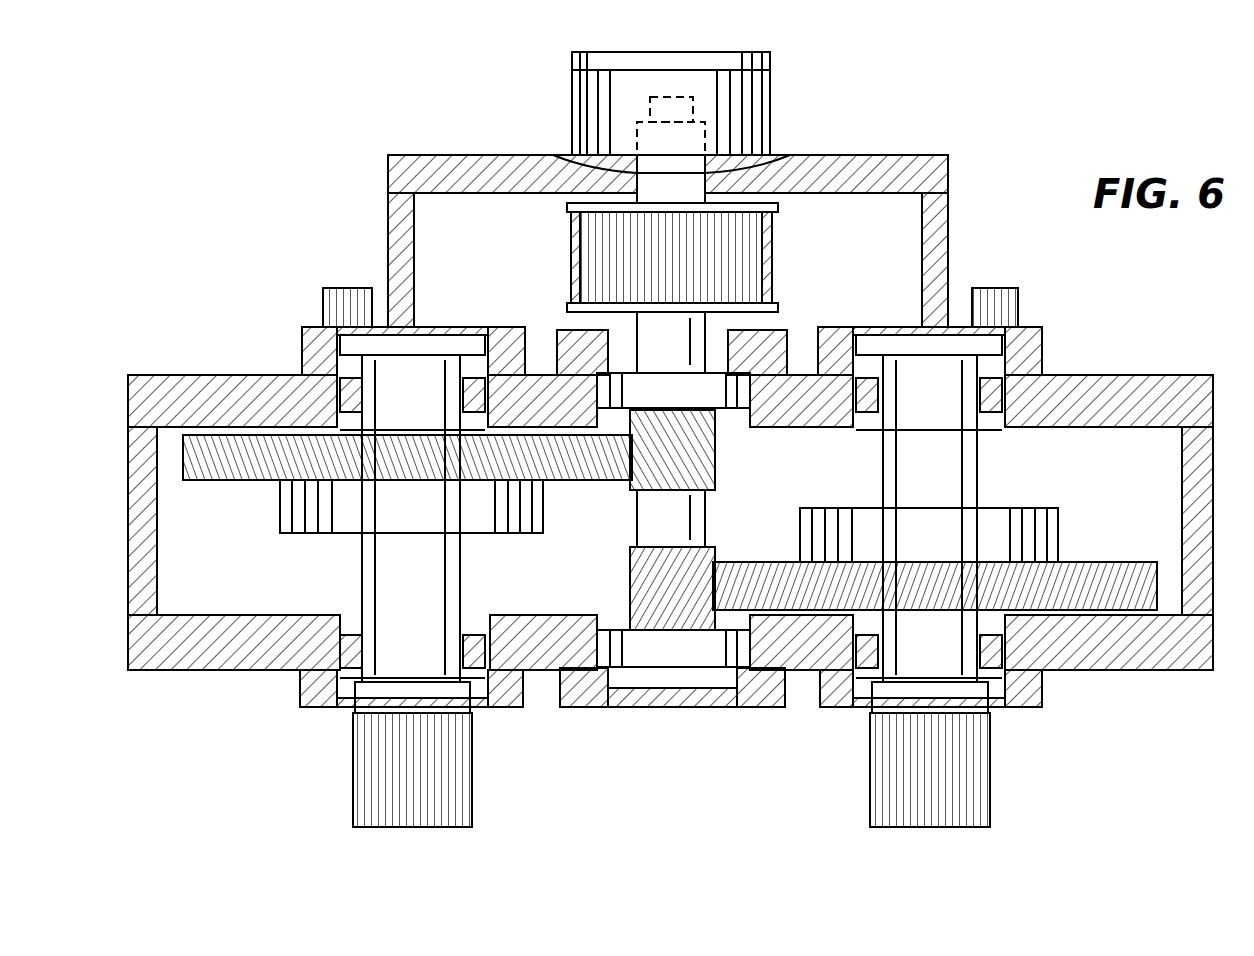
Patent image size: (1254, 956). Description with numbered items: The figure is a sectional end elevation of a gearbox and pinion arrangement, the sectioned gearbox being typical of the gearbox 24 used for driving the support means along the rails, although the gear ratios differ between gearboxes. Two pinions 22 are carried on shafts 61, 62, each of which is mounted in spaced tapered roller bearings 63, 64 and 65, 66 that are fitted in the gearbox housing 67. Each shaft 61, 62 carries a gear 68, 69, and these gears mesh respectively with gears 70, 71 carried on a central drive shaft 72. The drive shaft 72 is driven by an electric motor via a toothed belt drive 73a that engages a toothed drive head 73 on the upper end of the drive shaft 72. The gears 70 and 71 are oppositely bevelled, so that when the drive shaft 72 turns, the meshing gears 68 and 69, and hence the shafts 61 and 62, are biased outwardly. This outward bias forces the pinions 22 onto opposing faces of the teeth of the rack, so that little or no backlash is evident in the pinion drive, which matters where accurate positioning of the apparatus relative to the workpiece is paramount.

The pinion 22 is at (460, 790).
The gearbox 24 is at (170, 372).
The shaft 61 is at (398, 583).
The shaft 62 is at (953, 477).
The tapered roller bearing 63 is at (333, 647).
The tapered roller bearing 64 is at (330, 397).
The tapered roller bearing 65 is at (1010, 645).
The tapered roller bearing 66 is at (1007, 398).
The gearbox housing 67 is at (1130, 375).
The gear 68 is at (277, 460).
The gear 69 is at (1095, 560).
The gear 70 is at (690, 467).
The gear 71 is at (657, 577).
The drive shaft 72 is at (665, 520).
The toothed drive head 73 is at (728, 267).
The toothed belt drive 73a is at (573, 238).